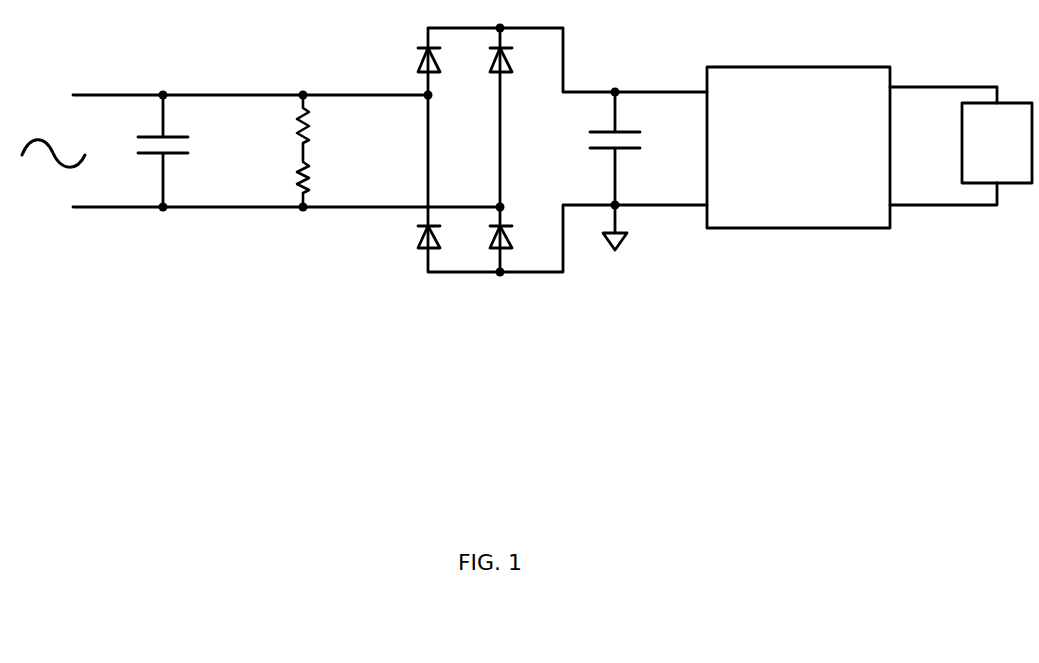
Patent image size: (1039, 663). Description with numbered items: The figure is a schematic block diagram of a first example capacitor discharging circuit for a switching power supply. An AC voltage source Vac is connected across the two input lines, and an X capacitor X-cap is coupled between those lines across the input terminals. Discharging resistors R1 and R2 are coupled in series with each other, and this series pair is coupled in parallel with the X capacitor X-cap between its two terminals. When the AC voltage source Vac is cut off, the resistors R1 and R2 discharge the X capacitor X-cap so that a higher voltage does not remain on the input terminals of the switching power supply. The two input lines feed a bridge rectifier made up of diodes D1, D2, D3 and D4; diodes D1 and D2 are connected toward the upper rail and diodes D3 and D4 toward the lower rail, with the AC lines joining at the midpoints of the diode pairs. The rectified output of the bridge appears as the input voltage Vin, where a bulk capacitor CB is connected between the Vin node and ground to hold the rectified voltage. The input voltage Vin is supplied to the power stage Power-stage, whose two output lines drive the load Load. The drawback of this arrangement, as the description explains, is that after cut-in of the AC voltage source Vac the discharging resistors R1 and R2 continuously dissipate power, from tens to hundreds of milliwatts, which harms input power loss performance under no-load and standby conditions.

The AC voltage source Vac is at (59, 141).
The X capacitor X-cap is at (198, 151).
The discharging resistor R1 is at (318, 123).
The discharging resistor R2 is at (318, 179).
The rectifier diode D1 is at (444, 60).
The rectifier diode D2 is at (516, 60).
The rectifier diode D3 is at (444, 238).
The rectifier diode D4 is at (516, 238).
The input voltage Vin is at (609, 78).
The bulk capacitor CB is at (629, 148).
The power stage Power-stage is at (798, 147).
The load Load is at (997, 143).